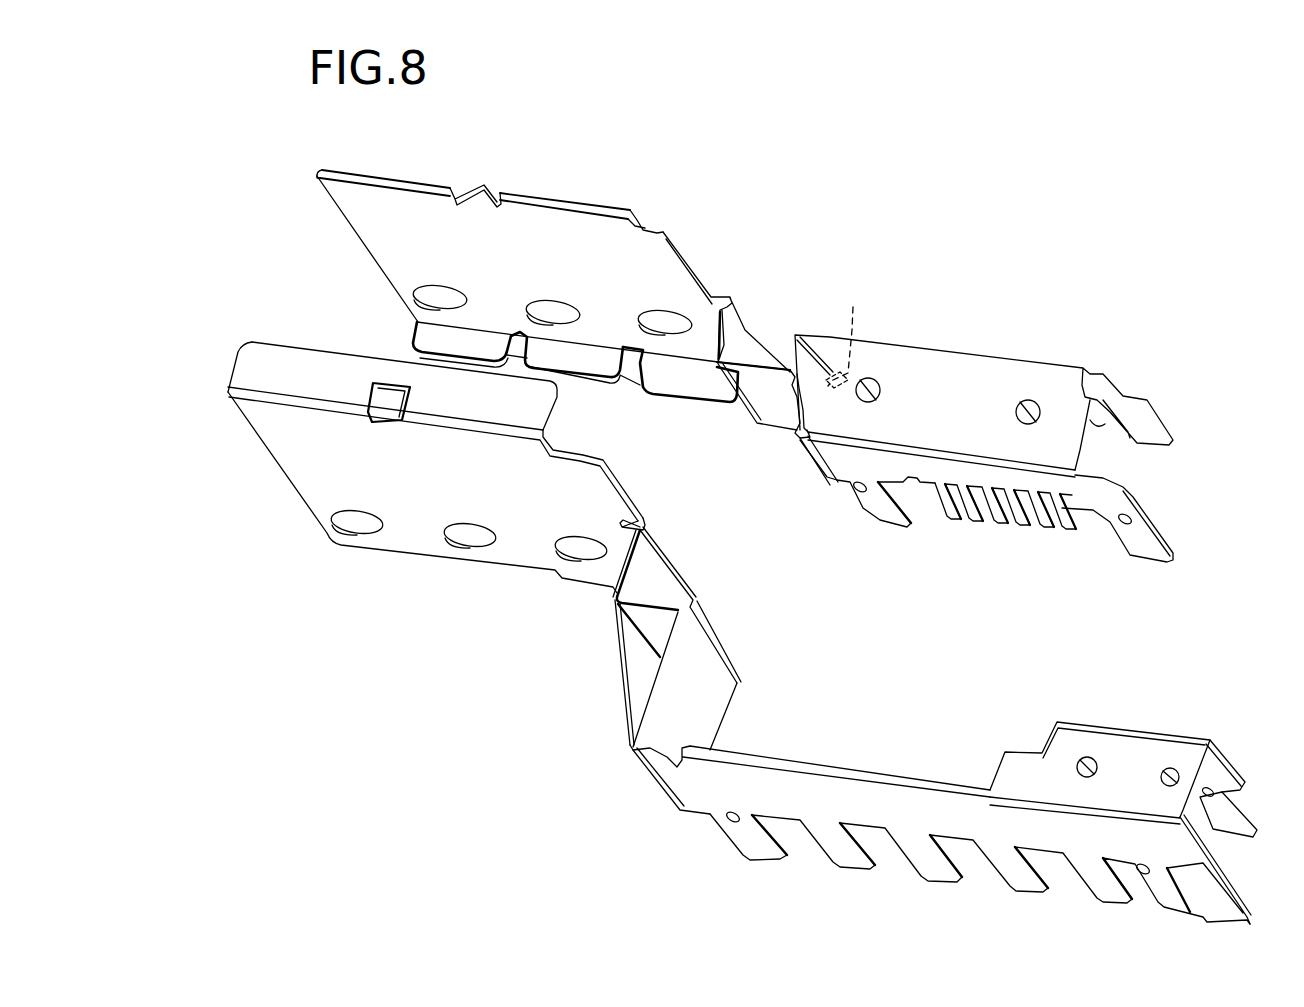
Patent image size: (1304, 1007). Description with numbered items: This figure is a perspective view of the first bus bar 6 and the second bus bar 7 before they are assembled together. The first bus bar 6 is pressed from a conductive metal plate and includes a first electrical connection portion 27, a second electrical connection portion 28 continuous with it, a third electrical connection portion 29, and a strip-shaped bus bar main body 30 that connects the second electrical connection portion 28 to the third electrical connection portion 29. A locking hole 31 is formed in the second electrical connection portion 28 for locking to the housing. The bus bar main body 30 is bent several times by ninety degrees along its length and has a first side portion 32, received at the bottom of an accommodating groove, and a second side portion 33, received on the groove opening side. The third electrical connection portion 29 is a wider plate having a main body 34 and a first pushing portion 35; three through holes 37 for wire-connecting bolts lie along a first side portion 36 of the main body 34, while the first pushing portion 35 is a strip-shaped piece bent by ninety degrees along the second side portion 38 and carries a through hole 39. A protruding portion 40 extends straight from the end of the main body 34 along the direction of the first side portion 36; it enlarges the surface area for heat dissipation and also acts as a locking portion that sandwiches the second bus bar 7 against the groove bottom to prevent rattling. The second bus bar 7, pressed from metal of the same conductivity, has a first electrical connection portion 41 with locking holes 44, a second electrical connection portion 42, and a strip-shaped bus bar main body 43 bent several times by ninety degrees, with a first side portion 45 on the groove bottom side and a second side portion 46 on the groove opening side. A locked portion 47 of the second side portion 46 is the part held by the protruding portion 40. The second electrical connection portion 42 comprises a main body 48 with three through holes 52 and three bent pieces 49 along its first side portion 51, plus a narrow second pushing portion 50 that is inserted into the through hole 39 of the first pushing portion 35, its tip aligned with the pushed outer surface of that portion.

The first bus bar 6 is at (943, 790).
The second bus bar 7 is at (921, 400).
The first electrical connection portion 27 is at (1133, 748).
The second electrical connection portion 28 is at (855, 775).
The third electrical connection portion 29 is at (257, 371).
The bus bar main body 30 is at (697, 671).
The locking hole 31 is at (730, 815).
The first side portion 32 is at (727, 719).
The second side portion 33 is at (651, 688).
The main body 34 is at (298, 462).
The first pushing portion 35 is at (310, 368).
The first side portion 36 is at (415, 550).
The through hole 37 is at (363, 523).
The second side portion 38 is at (270, 398).
The through hole 39 is at (393, 396).
The protruding portion 40 is at (636, 503).
The first electrical connection portion 41 is at (990, 374).
The second electrical connection portion 42 is at (372, 181).
The bus bar main body 43 is at (753, 400).
The locking hole 44 is at (830, 527).
The first side portion 45 is at (775, 430).
The second side portion 46 is at (757, 362).
The locked portion 47 is at (717, 303).
The main body 48 is at (373, 218).
The bent piece 49 is at (480, 342).
The second pushing portion 50 is at (473, 184).
The first side portion 51 is at (517, 335).
The through hole 52 is at (434, 288).